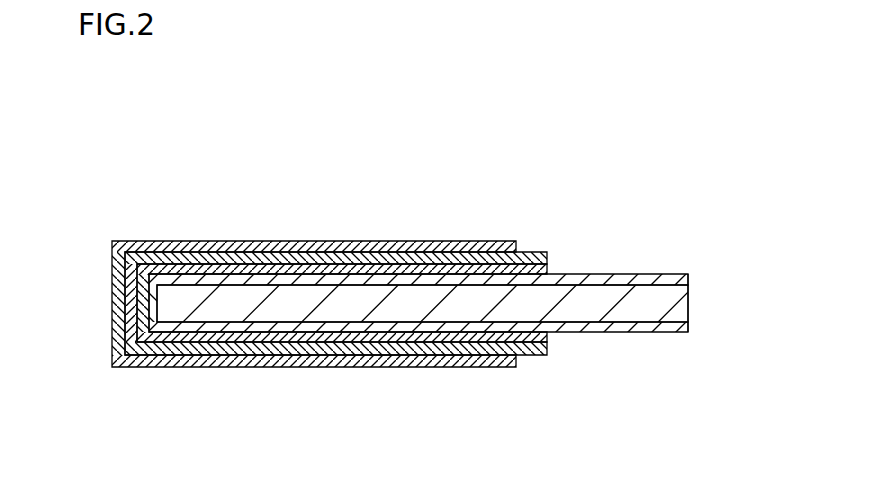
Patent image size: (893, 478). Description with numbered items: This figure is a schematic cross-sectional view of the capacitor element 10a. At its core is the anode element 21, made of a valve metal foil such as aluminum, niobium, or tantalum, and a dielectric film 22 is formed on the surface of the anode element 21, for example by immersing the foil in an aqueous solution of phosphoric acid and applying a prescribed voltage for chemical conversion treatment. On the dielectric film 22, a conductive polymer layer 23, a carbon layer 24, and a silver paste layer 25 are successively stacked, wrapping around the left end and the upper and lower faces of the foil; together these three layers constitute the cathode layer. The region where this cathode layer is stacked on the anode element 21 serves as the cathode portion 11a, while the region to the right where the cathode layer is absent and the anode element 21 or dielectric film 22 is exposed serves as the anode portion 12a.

The capacitor element 10a is at (543, 125).
The cathode portion 11a is at (365, 304).
The anode portion 12a is at (688, 387).
The anode element 21 is at (697, 273).
The dielectric film 22 is at (628, 275).
The conductive polymer layer 23 is at (377, 281).
The carbon layer 24 is at (528, 252).
The silver paste layer 25 is at (368, 242).